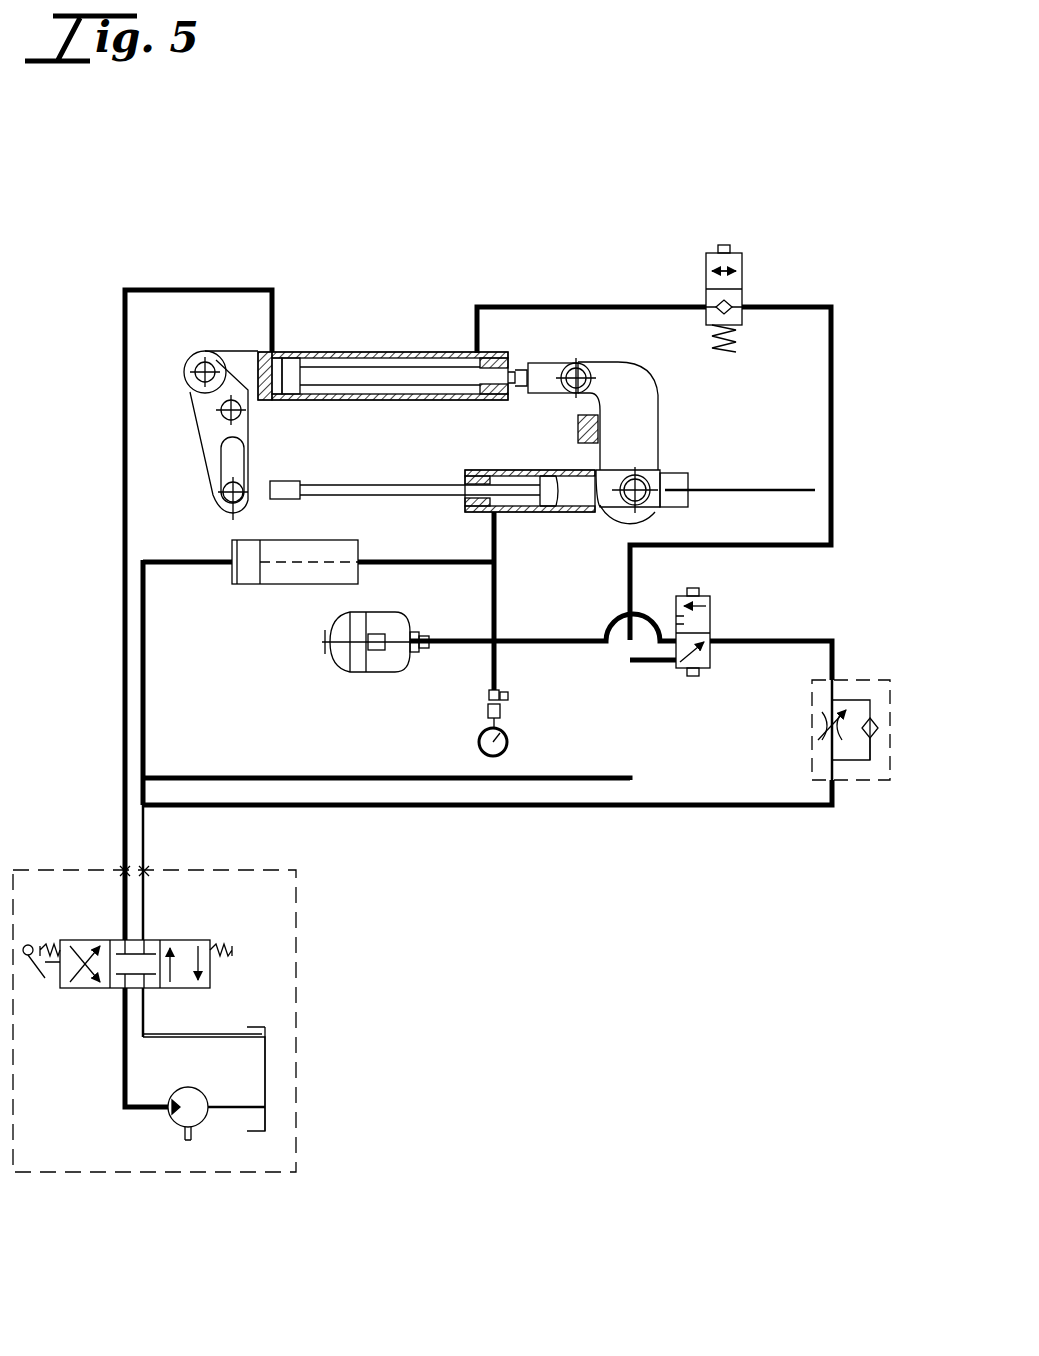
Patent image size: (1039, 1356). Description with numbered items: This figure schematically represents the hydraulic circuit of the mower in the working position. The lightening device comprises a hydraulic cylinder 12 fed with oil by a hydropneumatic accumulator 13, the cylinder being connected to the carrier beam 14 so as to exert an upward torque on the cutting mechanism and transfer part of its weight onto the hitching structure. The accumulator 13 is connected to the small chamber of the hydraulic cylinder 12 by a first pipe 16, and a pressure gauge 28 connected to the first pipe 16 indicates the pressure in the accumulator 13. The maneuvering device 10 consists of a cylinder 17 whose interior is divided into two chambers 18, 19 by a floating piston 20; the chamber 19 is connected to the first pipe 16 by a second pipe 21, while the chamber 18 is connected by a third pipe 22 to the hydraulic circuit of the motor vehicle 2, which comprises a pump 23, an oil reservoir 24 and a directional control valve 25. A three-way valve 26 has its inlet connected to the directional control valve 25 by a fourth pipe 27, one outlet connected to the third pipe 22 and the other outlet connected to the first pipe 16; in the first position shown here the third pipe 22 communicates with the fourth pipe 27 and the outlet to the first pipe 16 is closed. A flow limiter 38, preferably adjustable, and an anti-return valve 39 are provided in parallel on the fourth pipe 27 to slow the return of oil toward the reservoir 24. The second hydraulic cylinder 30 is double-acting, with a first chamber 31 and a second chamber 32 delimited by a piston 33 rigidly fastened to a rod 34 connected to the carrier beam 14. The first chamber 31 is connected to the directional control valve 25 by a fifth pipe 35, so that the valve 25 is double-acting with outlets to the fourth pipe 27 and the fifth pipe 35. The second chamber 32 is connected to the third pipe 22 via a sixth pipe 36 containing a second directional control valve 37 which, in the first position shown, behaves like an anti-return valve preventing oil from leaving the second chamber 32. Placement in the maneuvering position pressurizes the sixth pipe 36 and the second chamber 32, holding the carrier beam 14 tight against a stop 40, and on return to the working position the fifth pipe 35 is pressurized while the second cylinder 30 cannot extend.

The motor vehicle 2 is at (300, 1178).
The maneuvering device 10 is at (220, 524).
The hydraulic cylinder 12 is at (528, 470).
The hydropneumatic accumulator 13 is at (396, 673).
The carrier beam 14 is at (727, 490).
The first pipe 16 is at (522, 618).
The cylinder 17 is at (305, 587).
The chamber 18 is at (230, 578).
The chamber 19 is at (352, 562).
The floating piston 20 is at (252, 578).
The second pipe 21 is at (390, 564).
The third pipe 22 is at (233, 778).
The pump 23 is at (178, 1124).
The oil reservoir 24 is at (266, 1072).
The directional control valve 25 is at (210, 940).
The three-way valve 26 is at (712, 598).
The fourth pipe 27 is at (478, 806).
The pressure gauge 28 is at (510, 747).
The second hydraulic cylinder 30 is at (383, 340).
The first chamber 31 is at (272, 386).
The second chamber 32 is at (424, 352).
The piston 33 is at (288, 352).
The rod 34 is at (545, 363).
The fifth pipe 35 is at (125, 568).
The sixth pipe 36 is at (836, 450).
The second directional control valve 37 is at (743, 254).
The flow limiter 38 is at (812, 724).
The anti-return valve 39 is at (874, 740).
The stop 40 is at (578, 437).